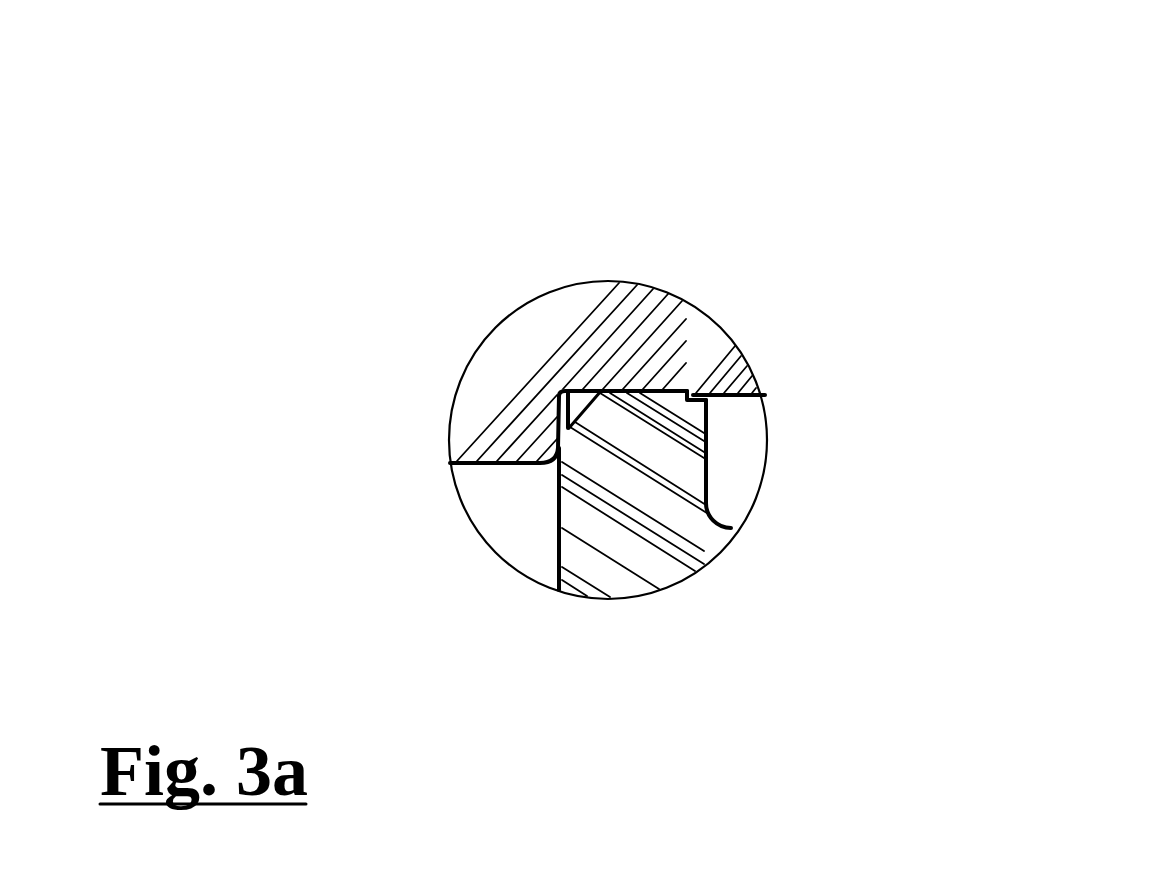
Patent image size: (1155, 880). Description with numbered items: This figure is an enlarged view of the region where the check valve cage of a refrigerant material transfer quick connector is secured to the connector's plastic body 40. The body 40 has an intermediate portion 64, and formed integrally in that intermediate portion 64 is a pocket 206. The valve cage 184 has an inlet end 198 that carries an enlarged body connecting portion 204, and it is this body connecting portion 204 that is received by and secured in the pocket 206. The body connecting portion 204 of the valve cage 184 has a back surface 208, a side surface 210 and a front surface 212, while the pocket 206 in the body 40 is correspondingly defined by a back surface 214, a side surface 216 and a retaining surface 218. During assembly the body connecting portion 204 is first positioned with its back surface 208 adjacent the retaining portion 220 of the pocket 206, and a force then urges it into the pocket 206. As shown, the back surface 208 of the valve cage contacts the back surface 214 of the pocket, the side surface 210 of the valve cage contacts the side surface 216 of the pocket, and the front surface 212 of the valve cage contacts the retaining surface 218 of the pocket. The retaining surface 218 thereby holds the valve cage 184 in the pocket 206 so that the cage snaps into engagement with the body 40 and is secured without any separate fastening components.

The body 40 is at (497, 357).
The intermediate portion 64 is at (678, 315).
The valve cage 184 is at (633, 543).
The inlet end 198 is at (553, 550).
The body connecting portion 204 is at (700, 417).
The pocket 206 is at (579, 390).
The back surface 208 is at (550, 440).
The side surface 210 is at (618, 390).
The front surface 212 is at (656, 418).
The back surface 214 is at (557, 406).
The side surface 216 is at (657, 388).
The retaining surface 218 is at (687, 390).
The retaining portion 220 is at (690, 394).